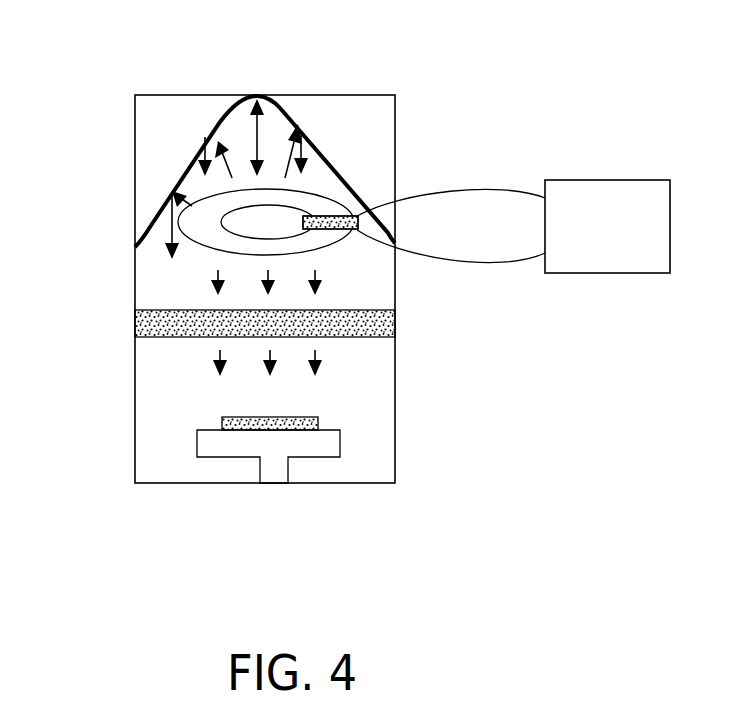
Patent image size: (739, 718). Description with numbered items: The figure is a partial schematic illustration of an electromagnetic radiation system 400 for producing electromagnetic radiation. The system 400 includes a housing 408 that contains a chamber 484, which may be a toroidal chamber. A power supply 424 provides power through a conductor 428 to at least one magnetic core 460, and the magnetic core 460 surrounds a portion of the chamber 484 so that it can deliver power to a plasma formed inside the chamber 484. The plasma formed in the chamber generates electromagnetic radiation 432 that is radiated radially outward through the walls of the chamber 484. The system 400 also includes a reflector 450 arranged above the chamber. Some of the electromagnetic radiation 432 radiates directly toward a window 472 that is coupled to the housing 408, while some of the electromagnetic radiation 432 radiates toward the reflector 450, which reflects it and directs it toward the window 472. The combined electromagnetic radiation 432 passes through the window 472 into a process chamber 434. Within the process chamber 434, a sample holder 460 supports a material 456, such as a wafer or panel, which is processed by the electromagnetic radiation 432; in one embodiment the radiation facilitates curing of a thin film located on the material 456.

The electromagnetic radiation system 400 is at (87, 513).
The housing 408 is at (298, 95).
The power supply 424 is at (612, 275).
The conductor 428 is at (452, 188).
The electromagnetic radiation 432 is at (215, 277).
The process chamber 434 is at (396, 415).
The reflector 450 is at (184, 170).
The material 456 is at (253, 417).
The magnetic core 460 is at (328, 233).
The window 472 is at (396, 323).
The chamber 484 is at (327, 198).